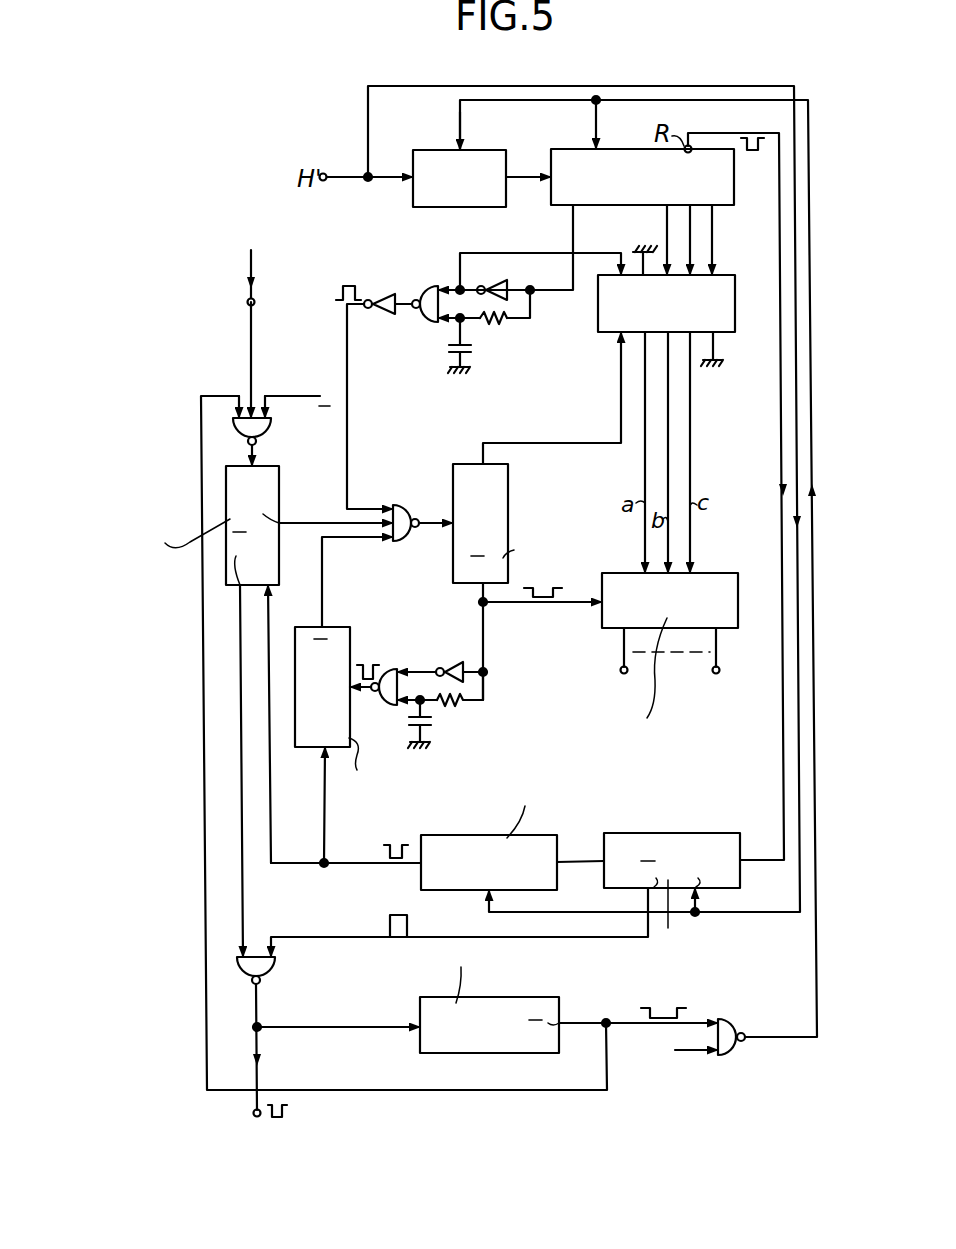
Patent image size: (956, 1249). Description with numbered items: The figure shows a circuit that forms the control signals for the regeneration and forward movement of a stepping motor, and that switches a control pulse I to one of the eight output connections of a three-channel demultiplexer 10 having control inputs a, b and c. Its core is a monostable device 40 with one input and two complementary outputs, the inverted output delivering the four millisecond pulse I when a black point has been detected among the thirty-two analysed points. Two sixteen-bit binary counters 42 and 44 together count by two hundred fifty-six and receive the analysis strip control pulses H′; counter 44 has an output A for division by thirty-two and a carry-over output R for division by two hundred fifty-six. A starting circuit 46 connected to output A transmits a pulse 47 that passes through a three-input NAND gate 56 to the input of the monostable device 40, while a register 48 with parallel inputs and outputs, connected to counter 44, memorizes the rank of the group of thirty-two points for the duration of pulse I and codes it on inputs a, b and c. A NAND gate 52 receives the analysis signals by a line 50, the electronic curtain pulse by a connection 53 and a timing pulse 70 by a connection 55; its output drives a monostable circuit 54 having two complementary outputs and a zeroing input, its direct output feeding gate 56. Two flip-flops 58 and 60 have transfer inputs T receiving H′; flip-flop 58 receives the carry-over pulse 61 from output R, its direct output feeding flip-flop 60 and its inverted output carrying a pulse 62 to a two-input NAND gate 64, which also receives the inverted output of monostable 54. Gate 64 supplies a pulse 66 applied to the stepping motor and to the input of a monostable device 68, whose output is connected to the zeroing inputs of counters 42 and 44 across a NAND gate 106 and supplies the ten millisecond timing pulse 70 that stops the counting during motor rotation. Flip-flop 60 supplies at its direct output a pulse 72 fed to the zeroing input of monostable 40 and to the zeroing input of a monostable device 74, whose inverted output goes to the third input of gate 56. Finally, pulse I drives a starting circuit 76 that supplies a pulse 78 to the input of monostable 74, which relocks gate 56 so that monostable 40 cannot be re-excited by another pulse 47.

The demultiplexer 10 is at (726, 573).
The monostable device 40 is at (551, 511).
The binary counter 42 is at (424, 140).
The binary counter 44 is at (566, 140).
The starting circuit 46 is at (489, 337).
The pulse 47 is at (357, 292).
The register 48 is at (770, 275).
The line 50 is at (250, 331).
The NAND gate 52 is at (240, 430).
The connection 53 is at (312, 398).
The monostable circuit 54 is at (326, 488).
The connection 55 is at (213, 396).
The NAND gate 56 is at (403, 506).
The flip-flop 58 is at (665, 833).
The flip-flop 60 is at (479, 835).
The carry-over pulse 61 is at (752, 153).
The pulse 62 is at (390, 920).
The NAND gate 64 is at (277, 963).
The pulse 66 is at (289, 1110).
The monostable device 68 is at (483, 997).
The timing pulse 70 is at (681, 983).
The pulse 72 is at (396, 845).
The monostable device 74 is at (307, 748).
The starting circuit 76 is at (424, 656).
The pulse 78 is at (368, 663).
The NAND gate 106 is at (735, 1031).